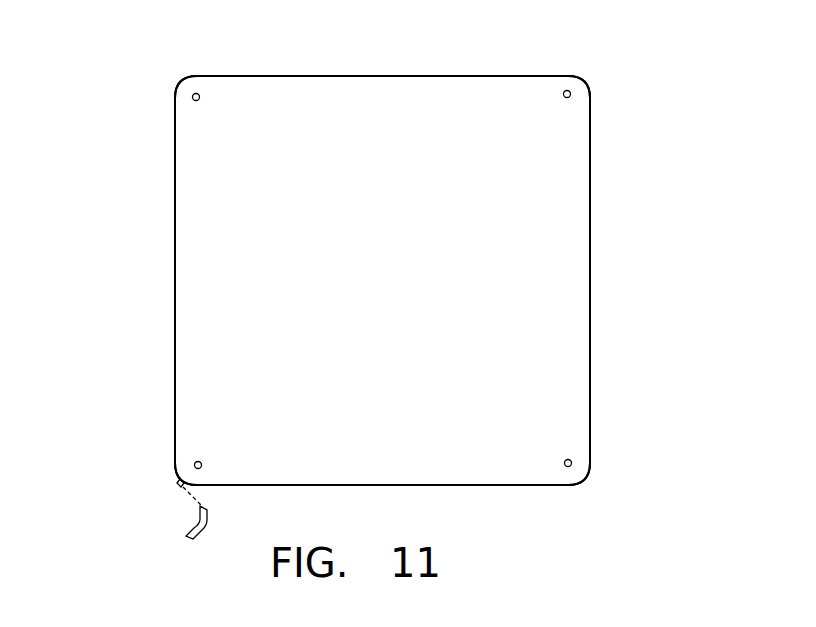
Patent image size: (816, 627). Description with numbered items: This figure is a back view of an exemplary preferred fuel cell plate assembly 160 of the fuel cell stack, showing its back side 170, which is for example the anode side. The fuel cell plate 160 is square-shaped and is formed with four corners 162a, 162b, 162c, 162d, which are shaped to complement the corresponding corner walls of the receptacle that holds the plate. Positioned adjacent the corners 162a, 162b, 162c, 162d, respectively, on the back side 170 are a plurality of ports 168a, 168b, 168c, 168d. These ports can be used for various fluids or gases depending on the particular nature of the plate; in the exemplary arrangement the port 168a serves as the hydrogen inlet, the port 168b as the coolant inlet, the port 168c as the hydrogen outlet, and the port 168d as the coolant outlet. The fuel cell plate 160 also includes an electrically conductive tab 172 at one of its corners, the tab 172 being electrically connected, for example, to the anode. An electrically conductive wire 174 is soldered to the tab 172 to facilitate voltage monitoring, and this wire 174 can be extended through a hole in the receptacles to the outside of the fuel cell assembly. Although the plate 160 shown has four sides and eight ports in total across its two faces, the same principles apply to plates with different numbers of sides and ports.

The fuel cell plate assembly 160 is at (208, 62).
The corner 162a is at (598, 66).
The corner 162b is at (168, 78).
The corner 162c is at (165, 466).
The corner 162d is at (603, 483).
The port 168a is at (567, 98).
The port 168b is at (196, 101).
The port 168c is at (198, 461).
The port 168d is at (571, 461).
The back side 170 is at (388, 92).
The electrically conductive tab 172 is at (165, 497).
The electrically conductive wire 174 is at (172, 536).